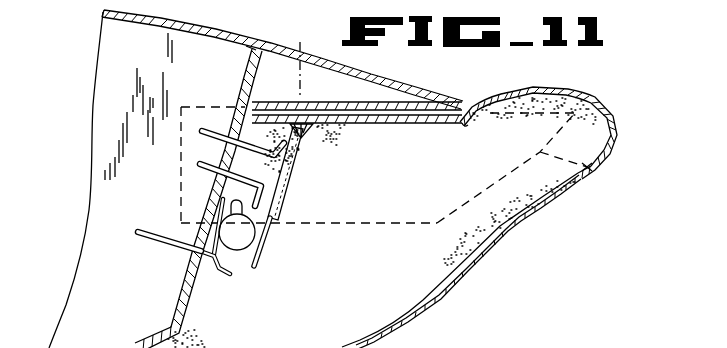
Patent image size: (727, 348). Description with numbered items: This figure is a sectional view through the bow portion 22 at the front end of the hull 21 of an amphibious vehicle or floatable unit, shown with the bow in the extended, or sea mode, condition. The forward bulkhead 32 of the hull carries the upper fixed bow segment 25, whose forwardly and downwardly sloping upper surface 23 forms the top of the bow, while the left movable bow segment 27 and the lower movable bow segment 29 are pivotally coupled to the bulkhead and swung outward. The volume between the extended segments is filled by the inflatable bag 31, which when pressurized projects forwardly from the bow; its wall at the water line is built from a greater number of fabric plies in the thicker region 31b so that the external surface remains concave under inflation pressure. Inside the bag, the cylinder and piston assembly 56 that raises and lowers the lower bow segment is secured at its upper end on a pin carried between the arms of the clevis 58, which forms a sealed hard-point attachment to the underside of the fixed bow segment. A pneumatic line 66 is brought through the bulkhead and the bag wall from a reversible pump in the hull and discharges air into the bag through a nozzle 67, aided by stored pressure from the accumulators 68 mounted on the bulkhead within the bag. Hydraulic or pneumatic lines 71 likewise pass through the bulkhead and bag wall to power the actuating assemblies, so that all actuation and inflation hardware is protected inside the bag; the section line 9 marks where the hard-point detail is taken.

The section line 9- 9 is at (301, 52).
The hull 21 is at (91, 107).
The bow portion 22 is at (606, 92).
The upper surface 23 is at (240, 41).
The upper fixed bow segment 25 is at (391, 83).
The left movable bow segment 27 is at (586, 172).
The lower movable bow segment 29 is at (211, 333).
The inflatable bag 31 is at (617, 121).
The thicker bag wall region 31b is at (509, 233).
The forward bulkhead 32 is at (244, 74).
The cylinder and piston assembly 56 is at (283, 194).
The clevis 58 is at (319, 177).
The pneumatic line 66 is at (166, 233).
The nozzle 67 is at (236, 249).
The accumulators 68 is at (253, 239).
The hydraulic lines 71 is at (203, 166).